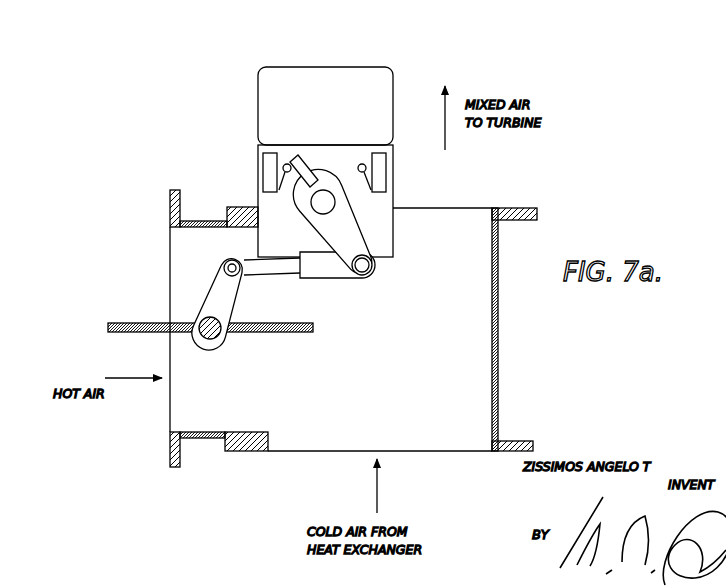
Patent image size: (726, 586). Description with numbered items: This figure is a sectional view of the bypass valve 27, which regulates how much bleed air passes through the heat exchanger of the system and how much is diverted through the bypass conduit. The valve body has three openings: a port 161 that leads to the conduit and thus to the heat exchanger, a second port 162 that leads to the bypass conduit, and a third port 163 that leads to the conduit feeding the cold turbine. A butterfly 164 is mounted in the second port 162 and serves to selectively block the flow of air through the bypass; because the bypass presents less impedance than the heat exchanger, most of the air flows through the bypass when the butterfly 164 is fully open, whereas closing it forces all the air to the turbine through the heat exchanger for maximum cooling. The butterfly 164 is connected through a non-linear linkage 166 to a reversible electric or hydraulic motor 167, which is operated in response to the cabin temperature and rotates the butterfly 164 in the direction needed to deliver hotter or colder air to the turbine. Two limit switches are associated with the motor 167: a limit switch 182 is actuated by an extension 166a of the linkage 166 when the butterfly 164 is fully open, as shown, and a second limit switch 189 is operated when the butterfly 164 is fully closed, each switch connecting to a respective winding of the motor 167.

The motor 167 is at (331, 73).
The limit switch 182 is at (267, 175).
The extension of linkage 166a is at (302, 162).
The second limit switch 189 is at (386, 167).
The third port 163 is at (478, 217).
The second port 162 is at (177, 288).
The non-linear linkage 166 is at (232, 299).
The butterfly 164 is at (289, 333).
The bypass valve 27 is at (499, 355).
The port 161 is at (450, 437).